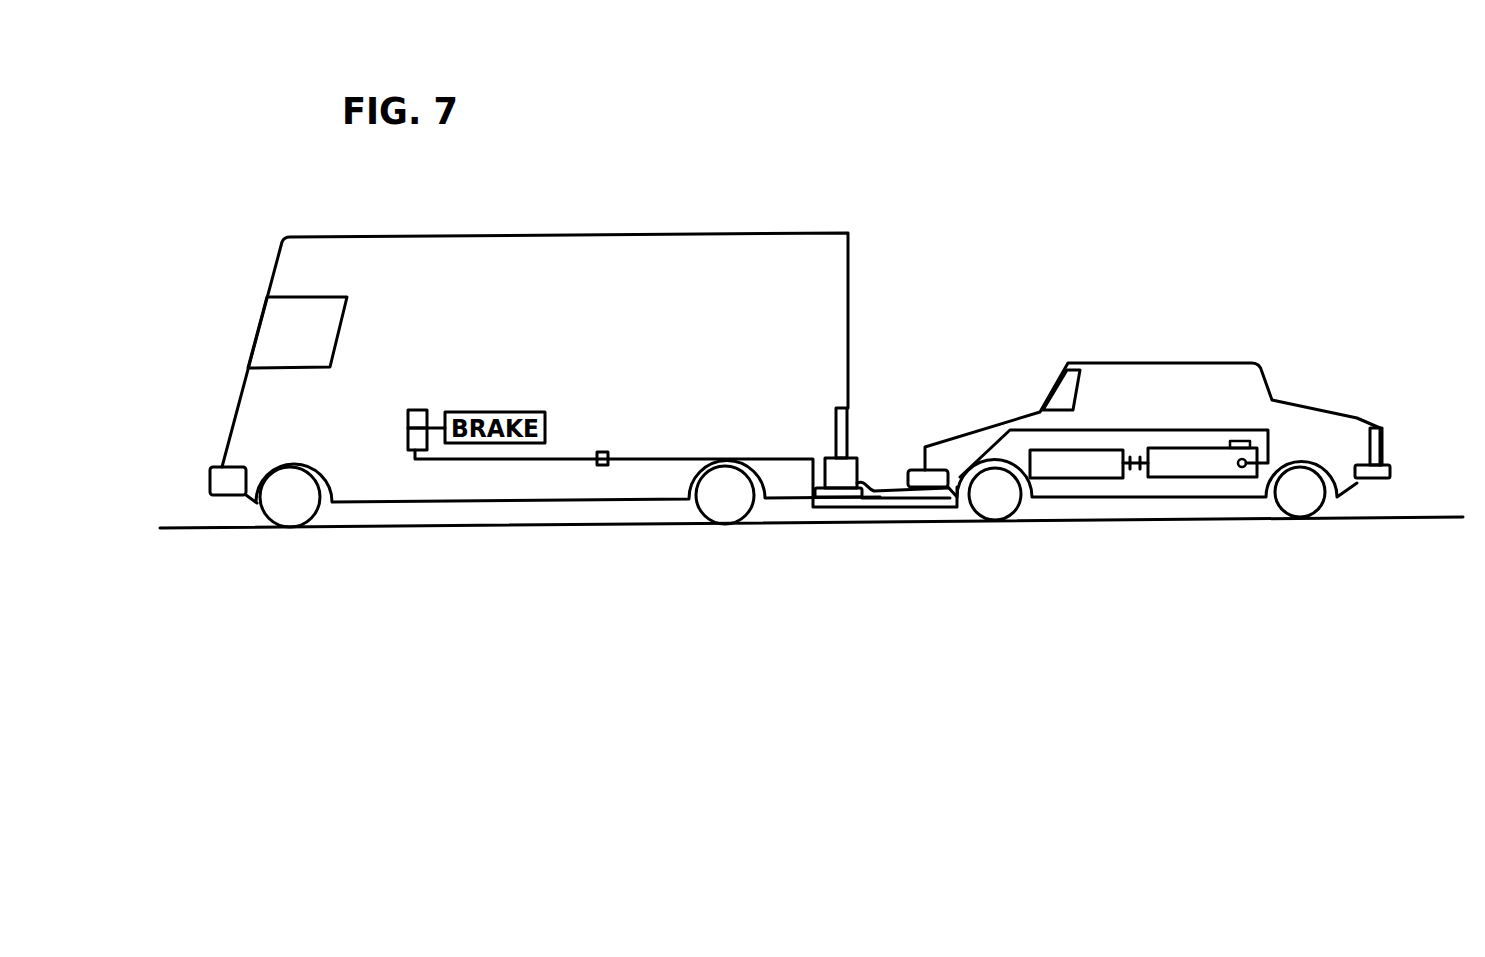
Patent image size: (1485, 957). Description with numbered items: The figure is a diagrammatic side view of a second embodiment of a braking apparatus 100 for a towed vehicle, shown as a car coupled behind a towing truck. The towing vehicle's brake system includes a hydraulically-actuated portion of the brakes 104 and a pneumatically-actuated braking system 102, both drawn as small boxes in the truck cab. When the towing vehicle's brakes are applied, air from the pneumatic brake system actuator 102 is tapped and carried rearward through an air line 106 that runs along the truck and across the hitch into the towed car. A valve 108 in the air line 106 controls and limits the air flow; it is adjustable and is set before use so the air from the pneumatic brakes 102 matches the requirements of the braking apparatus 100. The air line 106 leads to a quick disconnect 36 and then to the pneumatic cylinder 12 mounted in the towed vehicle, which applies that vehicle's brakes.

The braking apparatus 100 is at (1149, 393).
The pneumatically-actuated braking system 102 is at (408, 445).
The hydraulically-actuated portion of the brakes 104 is at (408, 413).
The air line 106 is at (690, 458).
The valve 108 is at (603, 452).
The quick disconnect 36 is at (1166, 428).
The pneumatic cylinder 12 is at (1198, 478).